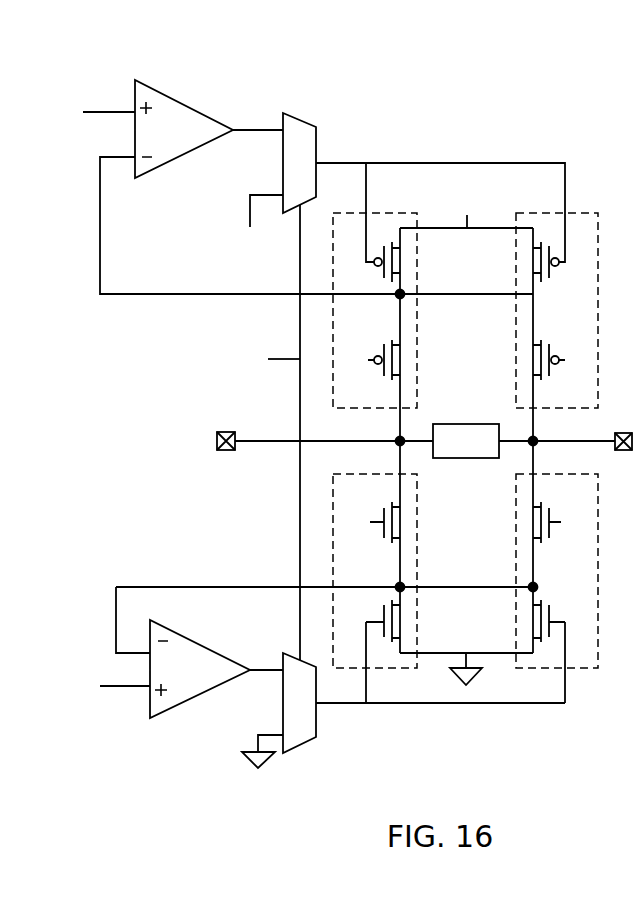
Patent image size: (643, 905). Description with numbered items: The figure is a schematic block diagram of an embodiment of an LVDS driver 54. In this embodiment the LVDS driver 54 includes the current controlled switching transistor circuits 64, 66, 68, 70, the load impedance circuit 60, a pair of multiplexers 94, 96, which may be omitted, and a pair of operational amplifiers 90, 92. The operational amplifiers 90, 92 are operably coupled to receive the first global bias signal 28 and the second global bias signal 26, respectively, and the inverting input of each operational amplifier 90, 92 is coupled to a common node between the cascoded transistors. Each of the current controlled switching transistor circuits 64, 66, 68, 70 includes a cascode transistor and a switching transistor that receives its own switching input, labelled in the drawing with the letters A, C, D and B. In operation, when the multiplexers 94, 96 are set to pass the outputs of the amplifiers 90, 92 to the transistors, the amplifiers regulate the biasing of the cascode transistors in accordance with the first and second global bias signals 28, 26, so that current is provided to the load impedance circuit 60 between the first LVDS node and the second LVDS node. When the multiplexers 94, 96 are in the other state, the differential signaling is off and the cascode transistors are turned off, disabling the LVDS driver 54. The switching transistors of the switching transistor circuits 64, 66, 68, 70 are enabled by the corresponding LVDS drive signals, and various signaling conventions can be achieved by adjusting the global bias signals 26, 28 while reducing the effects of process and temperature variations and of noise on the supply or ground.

The LVDS driver 54 is at (336, 471).
The 1st global bias signal 28 is at (87, 112).
The 2nd global bias signal 26 is at (108, 686).
The operational amplifier 90 is at (209, 129).
The operational amplifier 92 is at (216, 669).
The multiplexer 94 is at (308, 123).
The multiplexer 96 is at (303, 742).
The load impedance circuit 60 is at (466, 441).
The current controlled switching transistor circuit 64 is at (417, 308).
The current controlled switching transistor circuit 66 is at (598, 277).
The current controlled switching transistor circuit 68 is at (417, 503).
The current controlled switching transistor circuit 70 is at (598, 545).